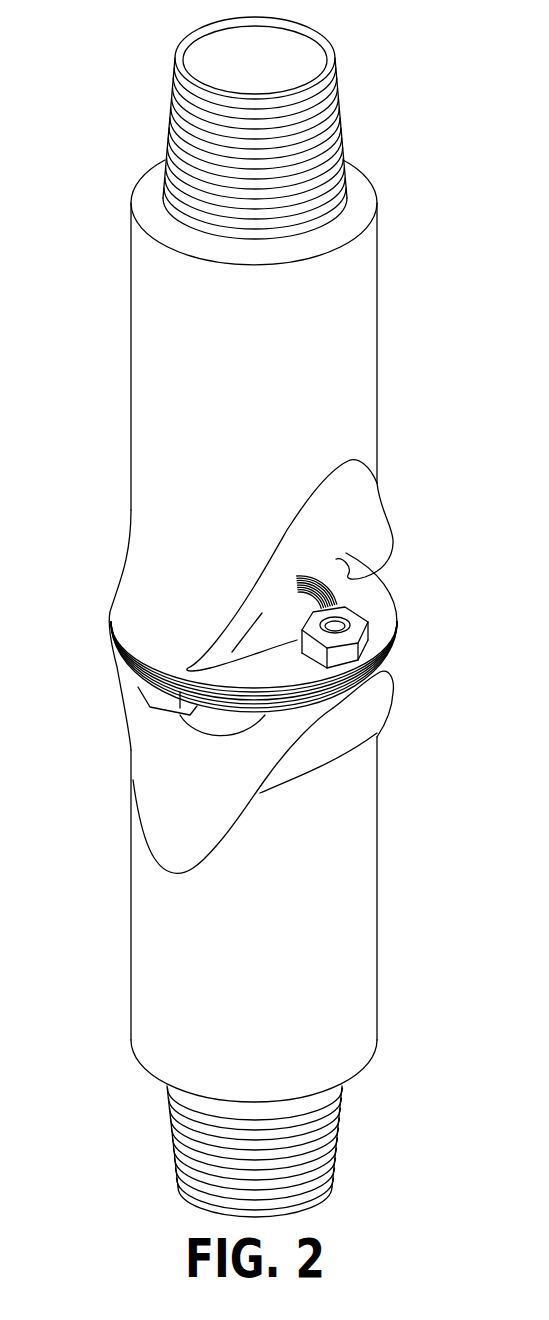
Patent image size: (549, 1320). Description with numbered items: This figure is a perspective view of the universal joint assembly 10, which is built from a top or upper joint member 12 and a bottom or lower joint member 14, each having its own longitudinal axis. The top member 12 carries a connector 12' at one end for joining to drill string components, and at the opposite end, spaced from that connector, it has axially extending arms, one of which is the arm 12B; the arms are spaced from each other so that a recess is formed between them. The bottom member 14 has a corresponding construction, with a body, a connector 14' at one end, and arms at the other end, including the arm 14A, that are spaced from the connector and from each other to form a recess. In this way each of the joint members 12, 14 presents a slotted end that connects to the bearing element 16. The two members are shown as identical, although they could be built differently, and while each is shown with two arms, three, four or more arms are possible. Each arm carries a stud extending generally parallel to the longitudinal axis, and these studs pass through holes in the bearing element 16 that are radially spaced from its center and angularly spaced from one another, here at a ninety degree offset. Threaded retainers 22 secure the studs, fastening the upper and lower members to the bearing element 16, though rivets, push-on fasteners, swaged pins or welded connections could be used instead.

The universal joint assembly 10 is at (117, 73).
The top joint member 12 is at (224, 415).
The connector 12' is at (291, 128).
The arm 12B is at (140, 622).
The bottom joint member 14 is at (291, 919).
The arm 14A is at (357, 723).
The connector 14' is at (293, 1151).
The bearing element 16 is at (400, 602).
The retainer 22 is at (398, 638).